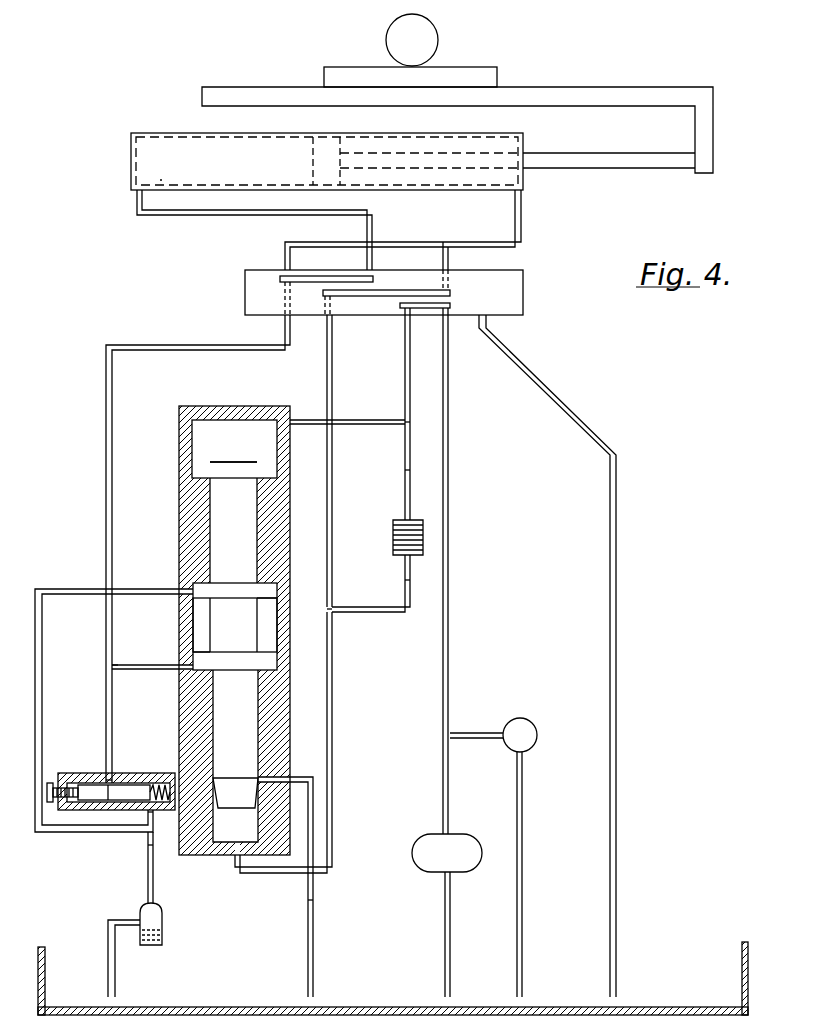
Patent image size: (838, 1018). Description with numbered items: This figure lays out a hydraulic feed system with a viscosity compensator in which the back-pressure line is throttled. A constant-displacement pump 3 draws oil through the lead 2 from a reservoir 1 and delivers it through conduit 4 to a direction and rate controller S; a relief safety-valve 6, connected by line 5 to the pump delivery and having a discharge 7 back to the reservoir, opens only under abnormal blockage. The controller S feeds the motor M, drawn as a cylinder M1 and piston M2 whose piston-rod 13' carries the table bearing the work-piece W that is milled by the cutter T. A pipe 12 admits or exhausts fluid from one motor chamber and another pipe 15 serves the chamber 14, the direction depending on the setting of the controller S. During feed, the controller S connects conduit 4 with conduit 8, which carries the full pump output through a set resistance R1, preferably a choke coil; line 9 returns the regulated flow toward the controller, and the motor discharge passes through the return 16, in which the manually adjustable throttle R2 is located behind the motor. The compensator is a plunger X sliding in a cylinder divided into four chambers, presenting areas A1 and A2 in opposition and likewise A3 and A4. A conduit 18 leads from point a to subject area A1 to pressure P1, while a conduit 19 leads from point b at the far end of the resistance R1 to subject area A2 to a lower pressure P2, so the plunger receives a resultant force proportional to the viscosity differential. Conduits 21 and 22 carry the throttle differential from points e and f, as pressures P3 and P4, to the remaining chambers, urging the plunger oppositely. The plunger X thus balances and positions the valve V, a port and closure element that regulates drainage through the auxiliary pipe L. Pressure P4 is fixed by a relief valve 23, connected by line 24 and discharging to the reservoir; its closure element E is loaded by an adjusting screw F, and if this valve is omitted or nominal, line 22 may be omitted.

The cutter T is at (436, 32).
The work-piece W is at (472, 67).
The table bar / piston rod 13' is at (457, 152).
The motor M is at (122, 185).
The cylinder M1 is at (130, 147).
The piston M2 is at (320, 155).
The chamber 14 is at (187, 165).
The pipe 12 is at (521, 215).
The pipe 15 is at (137, 199).
The controller S is at (245, 290).
The return 16 is at (285, 325).
The conduit 8 is at (405, 373).
The set resistance R1 is at (393, 540).
The hydraulic pressure P1 is at (349, 468).
The lower pressure P2 is at (310, 732).
The point a is at (414, 423).
The point b is at (327, 610).
The conduit 4 is at (443, 378).
The lead 2 is at (451, 916).
The constant-displacement pump 3 is at (412, 854).
The line 5 is at (482, 733).
The relief safety-valve 6 is at (536, 727).
The discharge 7 is at (526, 900).
The line 9 is at (332, 487).
The conduit 19 is at (327, 748).
The conduit 18 is at (312, 420).
The reservoir 1 is at (748, 976).
The plunger X is at (234, 630).
The area A1 is at (242, 462).
The area A2 is at (235, 793).
The area A3 is at (206, 654).
The area A4 is at (267, 598).
The valve V is at (250, 778).
The auxiliary pipe L is at (315, 930).
The conduit 22 is at (50, 668).
The point e is at (121, 654).
The conduit 21 is at (170, 669).
The valve element E is at (116, 791).
The throttle R2 is at (92, 773).
The adjusting screw F is at (55, 782).
The pressure P3 is at (122, 761).
The pressure P4 is at (160, 821).
The point f is at (140, 843).
The conduit 24 is at (153, 896).
The relief valve 23 is at (140, 910).